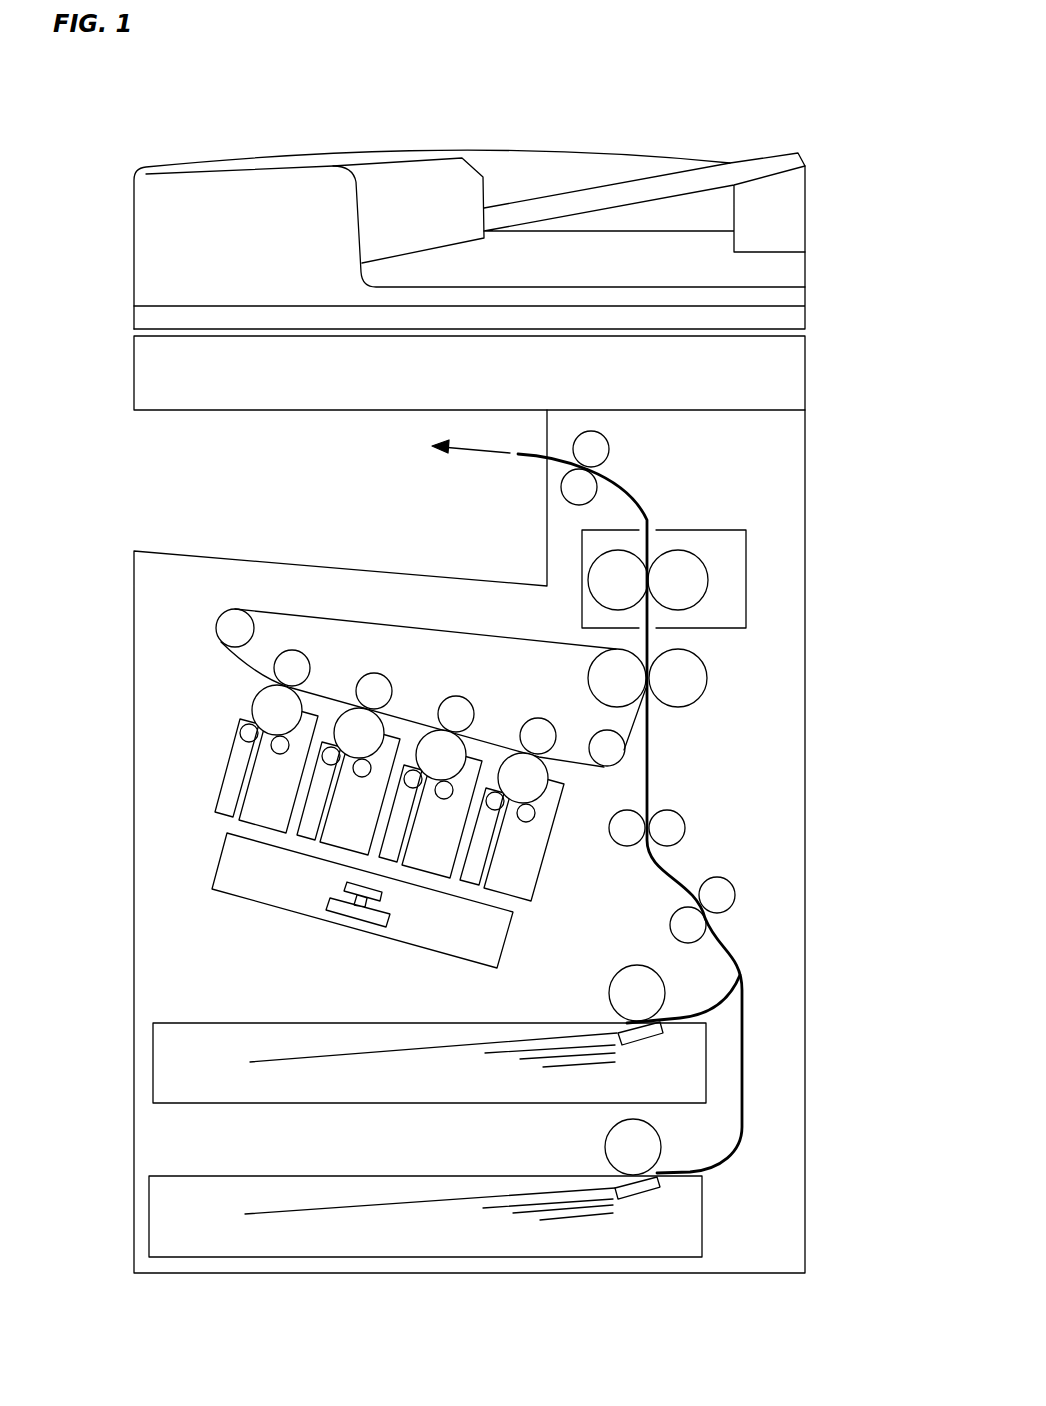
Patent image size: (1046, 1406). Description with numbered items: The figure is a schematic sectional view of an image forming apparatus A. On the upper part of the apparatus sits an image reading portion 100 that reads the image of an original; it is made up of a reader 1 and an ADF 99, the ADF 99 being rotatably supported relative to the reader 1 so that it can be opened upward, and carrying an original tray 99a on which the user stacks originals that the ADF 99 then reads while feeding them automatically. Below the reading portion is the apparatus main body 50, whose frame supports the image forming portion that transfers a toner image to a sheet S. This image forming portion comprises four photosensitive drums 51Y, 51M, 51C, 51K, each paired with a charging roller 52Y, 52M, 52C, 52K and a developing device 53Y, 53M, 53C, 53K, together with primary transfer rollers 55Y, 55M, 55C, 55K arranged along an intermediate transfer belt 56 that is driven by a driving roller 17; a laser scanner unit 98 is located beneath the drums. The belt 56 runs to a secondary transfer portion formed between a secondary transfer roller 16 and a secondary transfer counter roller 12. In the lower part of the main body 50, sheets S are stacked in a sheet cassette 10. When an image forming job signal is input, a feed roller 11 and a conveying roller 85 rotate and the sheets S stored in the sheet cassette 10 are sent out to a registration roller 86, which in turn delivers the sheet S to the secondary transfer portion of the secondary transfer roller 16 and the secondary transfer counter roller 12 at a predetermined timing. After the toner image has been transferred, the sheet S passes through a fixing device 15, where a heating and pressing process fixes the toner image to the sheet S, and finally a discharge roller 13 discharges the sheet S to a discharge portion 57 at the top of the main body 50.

The image forming apparatus A is at (698, 106).
The image reading portion 100 is at (72, 263).
The ADF 99 is at (133, 295).
The original tray 99a is at (547, 193).
The reader 1 is at (133, 365).
The apparatus main body 50 is at (133, 623).
The discharge portion 57 is at (393, 573).
The discharge roller 13 is at (603, 440).
The fixing device 15 is at (746, 548).
The secondary transfer roller 16 is at (698, 673).
The secondary transfer counter roller 12 is at (630, 697).
The intermediate transfer belt 56 is at (528, 638).
The driving roller 17 is at (233, 615).
The laser scanner unit 98 is at (275, 891).
The developing device 53Y is at (227, 768).
The charging roller 52Y is at (245, 783).
The developing device 53M is at (303, 802).
The charging roller 52M is at (332, 812).
The developing device 53C is at (382, 868).
The charging roller 52C is at (435, 800).
The developing device 53K is at (462, 890).
The charging roller 52K is at (518, 822).
The photosensitive drum 51Y is at (277, 710).
The photosensitive drum 51M is at (361, 733).
The photosensitive drum 51C is at (442, 755).
The photosensitive drum 51K is at (524, 778).
The primary transfer roller 55Y is at (293, 650).
The primary transfer roller 55M is at (373, 672).
The primary transfer roller 55C is at (453, 695).
The primary transfer roller 55K is at (537, 718).
The registration roller 86 is at (617, 838).
The conveying roller 85 is at (727, 900).
The feed roller 11 is at (627, 978).
The sheet cassette 10 is at (153, 1063).
The sheet S is at (457, 1047).